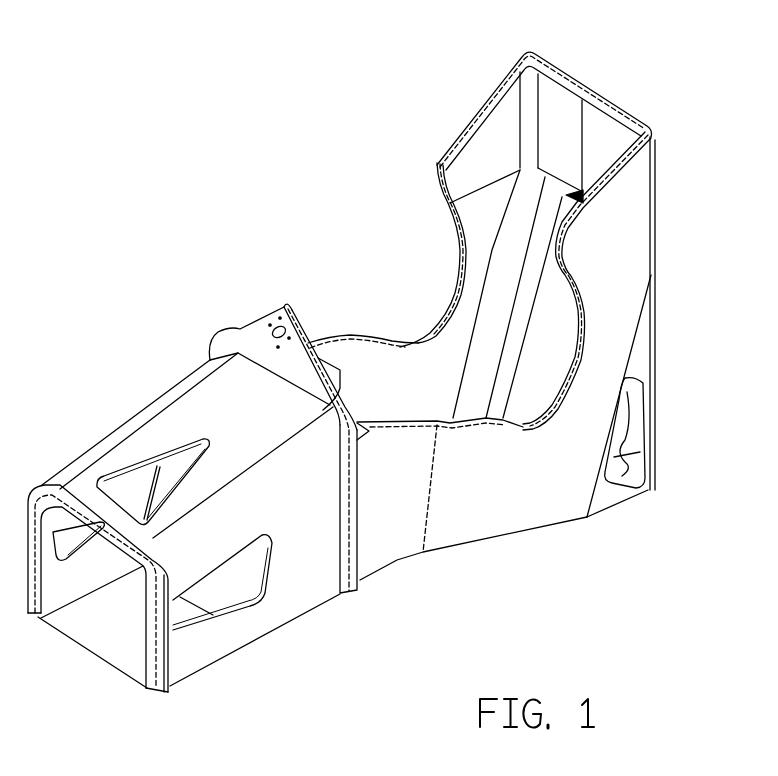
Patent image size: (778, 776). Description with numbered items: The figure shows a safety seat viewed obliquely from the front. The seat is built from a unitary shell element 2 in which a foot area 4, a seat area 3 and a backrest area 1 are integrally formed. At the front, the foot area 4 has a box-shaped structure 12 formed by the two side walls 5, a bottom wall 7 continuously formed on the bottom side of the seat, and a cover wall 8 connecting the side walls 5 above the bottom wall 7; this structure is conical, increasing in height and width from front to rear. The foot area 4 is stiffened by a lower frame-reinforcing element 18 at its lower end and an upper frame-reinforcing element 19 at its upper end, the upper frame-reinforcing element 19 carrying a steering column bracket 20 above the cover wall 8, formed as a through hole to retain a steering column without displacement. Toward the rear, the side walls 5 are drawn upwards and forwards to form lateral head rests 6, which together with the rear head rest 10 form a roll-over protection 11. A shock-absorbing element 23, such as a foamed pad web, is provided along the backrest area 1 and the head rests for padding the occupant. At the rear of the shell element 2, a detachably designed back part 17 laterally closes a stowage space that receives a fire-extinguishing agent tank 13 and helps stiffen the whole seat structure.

The backrest area 1 is at (497, 337).
The shell element 2 is at (550, 527).
The seat area 3 is at (443, 412).
The foot area 4 is at (308, 625).
The side walls 5 is at (58, 592).
The lateral head rests 6 is at (437, 178).
The bottom wall 7 is at (120, 650).
The cover wall 8 is at (261, 422).
The rear head rest 10 is at (567, 123).
The roll-over protection 11 is at (528, 52).
The box-shaped structure 12 is at (121, 405).
The fire-extinguishing agent tank 13 is at (612, 457).
The back part 17 is at (632, 494).
The lower frame-reinforcing element 18 is at (170, 685).
The upper frame-reinforcing element 19 is at (363, 592).
The steering column bracket 20 is at (236, 330).
The shock-absorbing element 23 is at (492, 142).